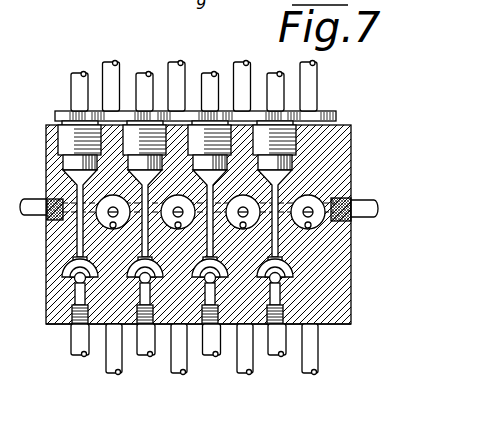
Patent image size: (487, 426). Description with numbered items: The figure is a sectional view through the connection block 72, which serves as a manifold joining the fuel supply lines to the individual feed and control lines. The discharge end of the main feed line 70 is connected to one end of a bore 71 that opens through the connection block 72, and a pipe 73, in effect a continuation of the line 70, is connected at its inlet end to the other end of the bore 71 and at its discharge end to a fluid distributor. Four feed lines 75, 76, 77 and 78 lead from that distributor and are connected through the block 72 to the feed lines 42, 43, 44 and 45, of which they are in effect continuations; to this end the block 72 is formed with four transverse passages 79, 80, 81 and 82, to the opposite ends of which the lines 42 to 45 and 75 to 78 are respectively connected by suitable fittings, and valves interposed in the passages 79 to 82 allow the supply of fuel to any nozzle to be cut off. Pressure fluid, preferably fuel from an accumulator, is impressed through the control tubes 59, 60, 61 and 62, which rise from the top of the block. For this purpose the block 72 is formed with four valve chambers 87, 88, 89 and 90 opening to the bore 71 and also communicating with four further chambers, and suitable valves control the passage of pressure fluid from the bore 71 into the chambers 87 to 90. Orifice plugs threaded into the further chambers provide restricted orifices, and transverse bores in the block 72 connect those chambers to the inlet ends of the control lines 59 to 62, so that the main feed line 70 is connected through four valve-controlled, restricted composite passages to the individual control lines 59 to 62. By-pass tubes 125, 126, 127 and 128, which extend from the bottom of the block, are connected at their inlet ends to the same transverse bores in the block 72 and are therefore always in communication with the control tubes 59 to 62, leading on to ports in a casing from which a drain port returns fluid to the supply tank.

The feed line 42 is at (278, 74).
The feed line 43 is at (210, 75).
The feed line 44 is at (144, 75).
The feed line 45 is at (79, 75).
The control line 59 is at (318, 77).
The control line 60 is at (242, 63).
The control line 61 is at (178, 64).
The control line 62 is at (111, 66).
The main feed line 70 is at (30, 198).
The bore 71 is at (322, 182).
The connection block 72 is at (341, 321).
The pipe 73 is at (359, 200).
The feed line 75 is at (278, 352).
The feed line 76 is at (211, 352).
The feed line 77 is at (146, 352).
The feed line 78 is at (80, 352).
The transverse passage 79 is at (326, 251).
The transverse passage 80 is at (265, 290).
The transverse passage 81 is at (64, 262).
The transverse passage 82 is at (76, 242).
The valve chamber 87 is at (352, 229).
The valve chamber 88 is at (221, 248).
The valve chamber 89 is at (162, 272).
The valve chamber 90 is at (76, 224).
The by-pass tube 125 is at (312, 374).
The by-pass tube 126 is at (244, 374).
The by-pass tube 127 is at (180, 374).
The by-pass tube 128 is at (117, 374).